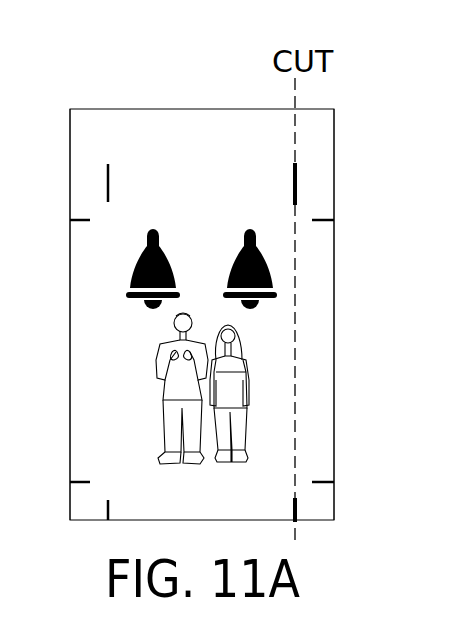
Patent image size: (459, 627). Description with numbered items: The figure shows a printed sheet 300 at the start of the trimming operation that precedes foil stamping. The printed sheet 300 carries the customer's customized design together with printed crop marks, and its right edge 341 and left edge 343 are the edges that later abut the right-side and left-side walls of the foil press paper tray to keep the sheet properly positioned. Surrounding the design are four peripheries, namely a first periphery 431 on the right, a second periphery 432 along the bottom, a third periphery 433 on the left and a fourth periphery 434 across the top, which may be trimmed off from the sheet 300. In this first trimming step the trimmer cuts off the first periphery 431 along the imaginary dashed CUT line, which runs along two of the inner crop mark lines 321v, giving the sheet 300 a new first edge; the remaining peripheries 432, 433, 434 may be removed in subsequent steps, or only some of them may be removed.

The printed sheet 300 is at (216, 192).
The inner crop mark lines 321v is at (294, 176).
The right edge 341 is at (334, 262).
The left edge 343 is at (70, 365).
The first periphery 431 is at (314, 350).
The second periphery 432 is at (222, 512).
The third periphery 433 is at (121, 401).
The fourth periphery 434 is at (203, 139).